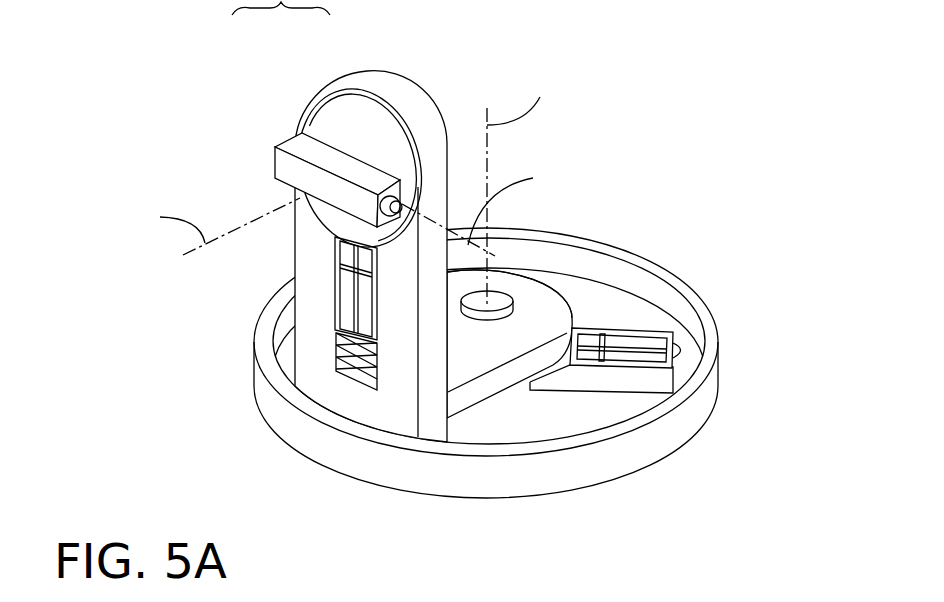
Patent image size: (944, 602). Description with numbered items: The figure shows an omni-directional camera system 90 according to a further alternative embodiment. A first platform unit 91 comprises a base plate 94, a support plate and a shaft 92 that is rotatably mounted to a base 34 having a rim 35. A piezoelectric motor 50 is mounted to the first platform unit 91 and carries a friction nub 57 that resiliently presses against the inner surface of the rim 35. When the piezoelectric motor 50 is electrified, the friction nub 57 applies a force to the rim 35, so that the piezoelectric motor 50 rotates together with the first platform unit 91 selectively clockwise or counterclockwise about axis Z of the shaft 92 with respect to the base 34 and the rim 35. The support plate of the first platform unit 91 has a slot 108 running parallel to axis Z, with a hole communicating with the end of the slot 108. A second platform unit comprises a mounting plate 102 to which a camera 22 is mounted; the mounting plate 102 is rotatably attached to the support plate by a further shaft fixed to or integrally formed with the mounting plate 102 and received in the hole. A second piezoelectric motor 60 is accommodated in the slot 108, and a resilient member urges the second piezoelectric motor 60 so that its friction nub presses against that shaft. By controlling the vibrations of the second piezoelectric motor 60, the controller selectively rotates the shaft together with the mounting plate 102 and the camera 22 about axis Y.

The omni-directional camera system 90 is at (207, 117).
The camera 22 is at (293, 147).
The mounting plate 102 is at (330, 120).
The second piezoelectric motor 60 is at (338, 288).
The slot 108 is at (336, 390).
The shaft 92 is at (500, 297).
The first platform unit 91 is at (559, 286).
The base plate 94 is at (517, 333).
The piezoelectric motor 50 is at (634, 326).
The friction nub 57 is at (682, 348).
The rim 35 is at (708, 345).
The base 34 is at (508, 420).